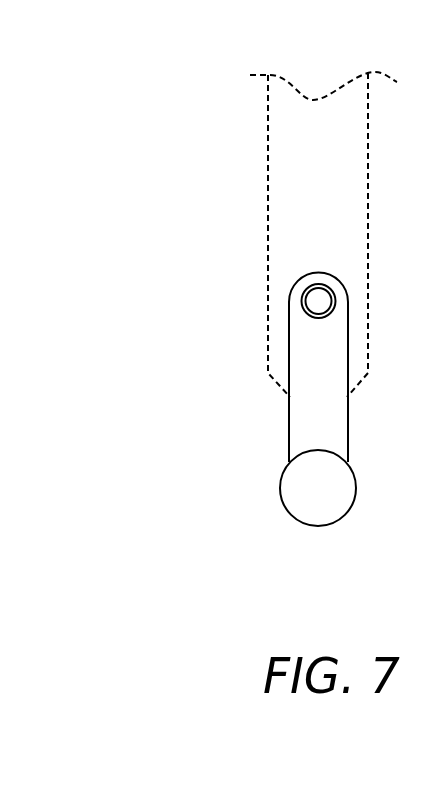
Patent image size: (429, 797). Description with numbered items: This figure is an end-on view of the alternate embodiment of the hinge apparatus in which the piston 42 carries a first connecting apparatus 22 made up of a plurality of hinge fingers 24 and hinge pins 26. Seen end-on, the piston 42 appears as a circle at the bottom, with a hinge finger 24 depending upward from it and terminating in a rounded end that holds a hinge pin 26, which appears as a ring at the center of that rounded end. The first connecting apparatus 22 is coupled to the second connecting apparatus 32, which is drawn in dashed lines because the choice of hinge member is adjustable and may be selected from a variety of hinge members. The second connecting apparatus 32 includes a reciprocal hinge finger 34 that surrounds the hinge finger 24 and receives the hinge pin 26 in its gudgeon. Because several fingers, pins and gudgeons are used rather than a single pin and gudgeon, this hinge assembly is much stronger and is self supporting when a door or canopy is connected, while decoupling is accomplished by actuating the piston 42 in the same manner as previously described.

The second connecting apparatus 32 is at (229, 98).
The reciprocal hinge finger 34 is at (283, 127).
The first connecting apparatus 22 is at (197, 362).
The hinge finger 24 is at (295, 417).
The hinge pin 26 is at (323, 302).
The piston 42 is at (331, 500).